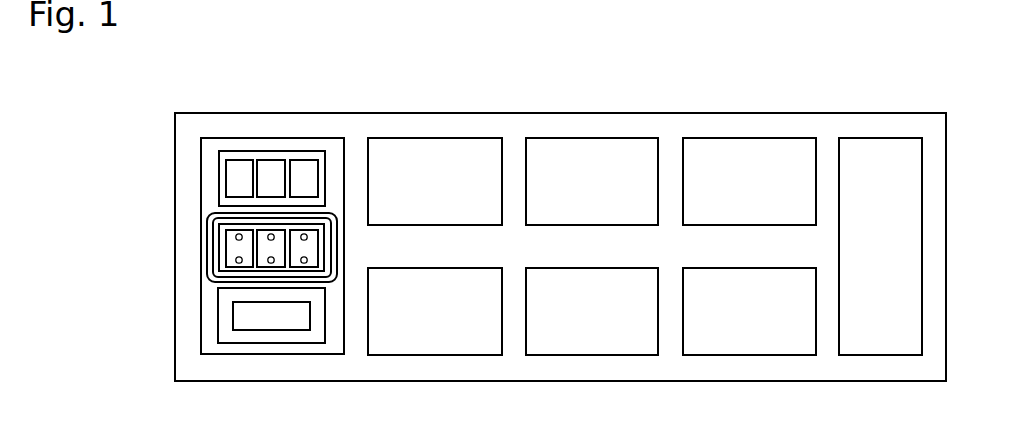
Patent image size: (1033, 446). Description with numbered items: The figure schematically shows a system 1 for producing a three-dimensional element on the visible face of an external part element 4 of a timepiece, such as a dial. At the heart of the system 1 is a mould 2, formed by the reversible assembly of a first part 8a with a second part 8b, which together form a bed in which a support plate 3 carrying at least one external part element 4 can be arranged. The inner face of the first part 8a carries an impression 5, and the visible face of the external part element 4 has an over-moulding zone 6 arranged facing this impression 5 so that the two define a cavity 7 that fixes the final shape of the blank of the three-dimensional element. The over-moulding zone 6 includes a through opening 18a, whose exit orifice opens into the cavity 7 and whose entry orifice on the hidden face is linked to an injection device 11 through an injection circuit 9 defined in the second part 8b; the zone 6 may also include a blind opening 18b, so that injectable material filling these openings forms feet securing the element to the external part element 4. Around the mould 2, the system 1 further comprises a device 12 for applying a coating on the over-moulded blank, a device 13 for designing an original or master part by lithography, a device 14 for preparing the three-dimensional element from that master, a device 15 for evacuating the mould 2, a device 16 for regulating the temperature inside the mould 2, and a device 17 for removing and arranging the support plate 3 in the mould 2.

The system 1 is at (160, 185).
The mould 2 is at (200, 155).
The support plate 3 is at (207, 243).
The external part element 4 is at (243, 277).
The impression 5 is at (266, 168).
The over-moulding zone 6 is at (313, 232).
The cavity 7 is at (252, 70).
The first part 8a is at (229, 151).
The second part 8b is at (230, 343).
The injection circuit 9 is at (280, 330).
The injection device 11 is at (435, 181).
The coating application device 12 is at (592, 181).
The master part design device 13 is at (749, 181).
The element preparation device 14 is at (435, 311).
The evacuation device 15 is at (592, 311).
The temperature regulation device 16 is at (749, 311).
The support plate handling device 17 is at (871, 340).
The through opening 18a is at (239, 234).
The blind opening 18b is at (238, 263).